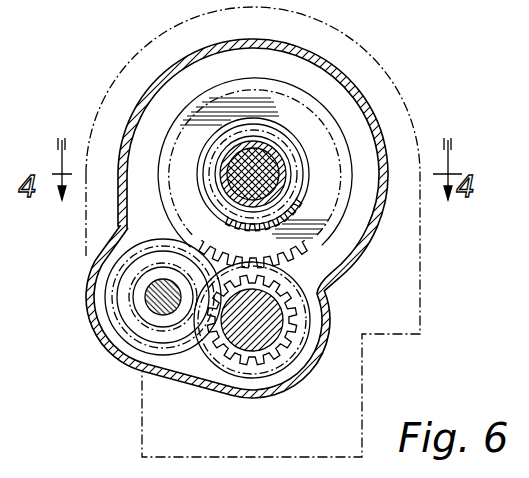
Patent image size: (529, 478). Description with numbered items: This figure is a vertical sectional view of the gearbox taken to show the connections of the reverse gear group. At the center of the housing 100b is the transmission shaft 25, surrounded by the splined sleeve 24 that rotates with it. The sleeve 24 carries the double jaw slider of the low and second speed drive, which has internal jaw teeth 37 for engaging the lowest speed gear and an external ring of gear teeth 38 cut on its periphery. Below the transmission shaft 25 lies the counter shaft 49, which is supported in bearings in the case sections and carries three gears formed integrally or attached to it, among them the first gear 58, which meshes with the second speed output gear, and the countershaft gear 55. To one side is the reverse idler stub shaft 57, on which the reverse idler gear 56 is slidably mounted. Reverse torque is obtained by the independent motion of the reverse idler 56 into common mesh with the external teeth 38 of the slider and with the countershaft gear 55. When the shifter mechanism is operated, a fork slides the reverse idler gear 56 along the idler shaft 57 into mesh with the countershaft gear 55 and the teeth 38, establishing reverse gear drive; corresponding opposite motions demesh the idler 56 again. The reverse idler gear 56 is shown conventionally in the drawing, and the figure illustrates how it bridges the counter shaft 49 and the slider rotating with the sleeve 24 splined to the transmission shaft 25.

The housing 100b is at (342, 72).
The transmission shaft 25 is at (268, 165).
The splined sleeve 24 is at (224, 163).
The internal jaw teeth 37 is at (258, 228).
The external gear teeth 38 is at (320, 214).
The counter shaft 49 is at (278, 292).
The countershaft gear 55 is at (296, 322).
The reverse idler gear 56 is at (177, 328).
The reverse idler stub shaft 57 is at (162, 279).
The first gear of counter shaft 58 is at (327, 293).